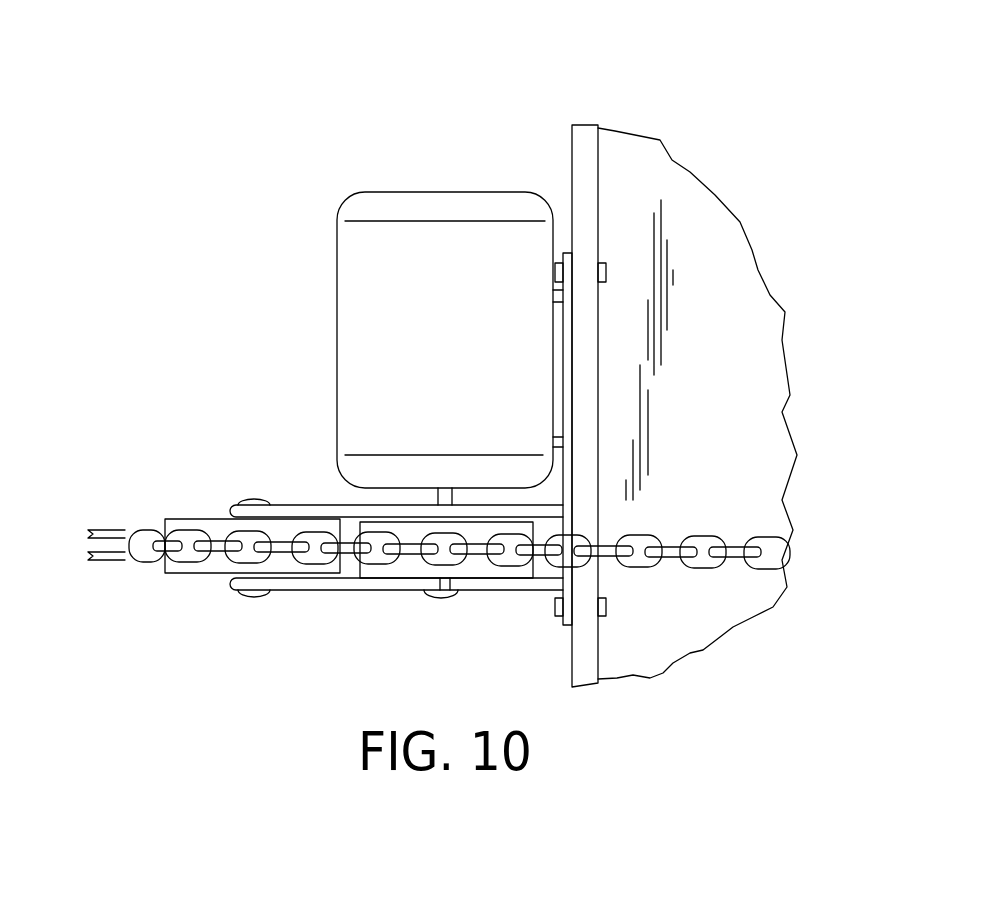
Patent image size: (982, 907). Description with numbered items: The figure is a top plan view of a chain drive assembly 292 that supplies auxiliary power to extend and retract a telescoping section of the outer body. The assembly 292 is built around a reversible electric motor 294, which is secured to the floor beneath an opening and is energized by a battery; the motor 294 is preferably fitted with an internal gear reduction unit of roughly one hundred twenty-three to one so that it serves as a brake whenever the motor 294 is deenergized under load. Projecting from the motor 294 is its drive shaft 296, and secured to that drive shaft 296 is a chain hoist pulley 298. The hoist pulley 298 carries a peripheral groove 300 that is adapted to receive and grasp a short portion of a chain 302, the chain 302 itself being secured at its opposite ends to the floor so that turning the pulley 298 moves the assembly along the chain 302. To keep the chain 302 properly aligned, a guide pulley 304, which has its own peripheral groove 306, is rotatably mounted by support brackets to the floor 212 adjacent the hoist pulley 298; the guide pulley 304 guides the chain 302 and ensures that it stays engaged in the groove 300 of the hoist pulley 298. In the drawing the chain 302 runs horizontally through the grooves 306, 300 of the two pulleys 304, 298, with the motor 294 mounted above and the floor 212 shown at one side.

The chain drive assembly 292 is at (494, 120).
The reversible electric motor 294 is at (343, 273).
The drive shaft 296 is at (437, 503).
The chain hoist pulley 298 is at (387, 570).
The peripheral groove 300 is at (470, 565).
The chain 302 is at (108, 558).
The guide pulley 304 is at (187, 518).
The peripheral groove 306 is at (198, 560).
The floor 212 is at (680, 337).